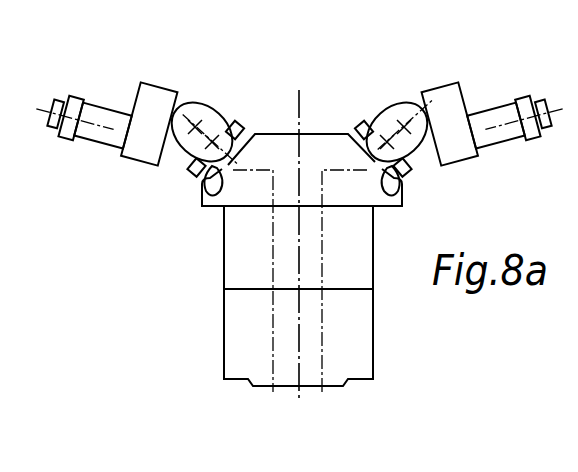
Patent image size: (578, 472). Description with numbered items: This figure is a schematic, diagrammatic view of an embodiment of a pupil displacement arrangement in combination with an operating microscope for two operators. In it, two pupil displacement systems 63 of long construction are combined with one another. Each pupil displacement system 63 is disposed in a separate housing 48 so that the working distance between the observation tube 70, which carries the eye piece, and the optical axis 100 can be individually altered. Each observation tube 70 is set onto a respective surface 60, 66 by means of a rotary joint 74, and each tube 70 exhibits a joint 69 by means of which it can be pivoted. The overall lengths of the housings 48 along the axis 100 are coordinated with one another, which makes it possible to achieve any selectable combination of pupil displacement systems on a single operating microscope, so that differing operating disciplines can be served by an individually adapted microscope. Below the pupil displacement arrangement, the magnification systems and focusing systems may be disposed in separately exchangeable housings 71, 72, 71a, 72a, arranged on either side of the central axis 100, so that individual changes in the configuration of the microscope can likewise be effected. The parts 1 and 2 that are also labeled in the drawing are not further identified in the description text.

The first housing part 1 is at (322, 355).
The second housing part 2 is at (275, 350).
The housing 48 is at (277, 133).
The surface 60 is at (398, 197).
The pupil displacement system 63 is at (227, 217).
The surface 66 is at (202, 198).
The joint 69 is at (217, 104).
The tube 70 is at (125, 95).
The housing 71 is at (237, 260).
The housing 71a is at (238, 325).
The housing 72 is at (365, 245).
The housing 72a is at (357, 338).
The rotary joint 74 is at (200, 182).
The optical axis 100 is at (297, 398).